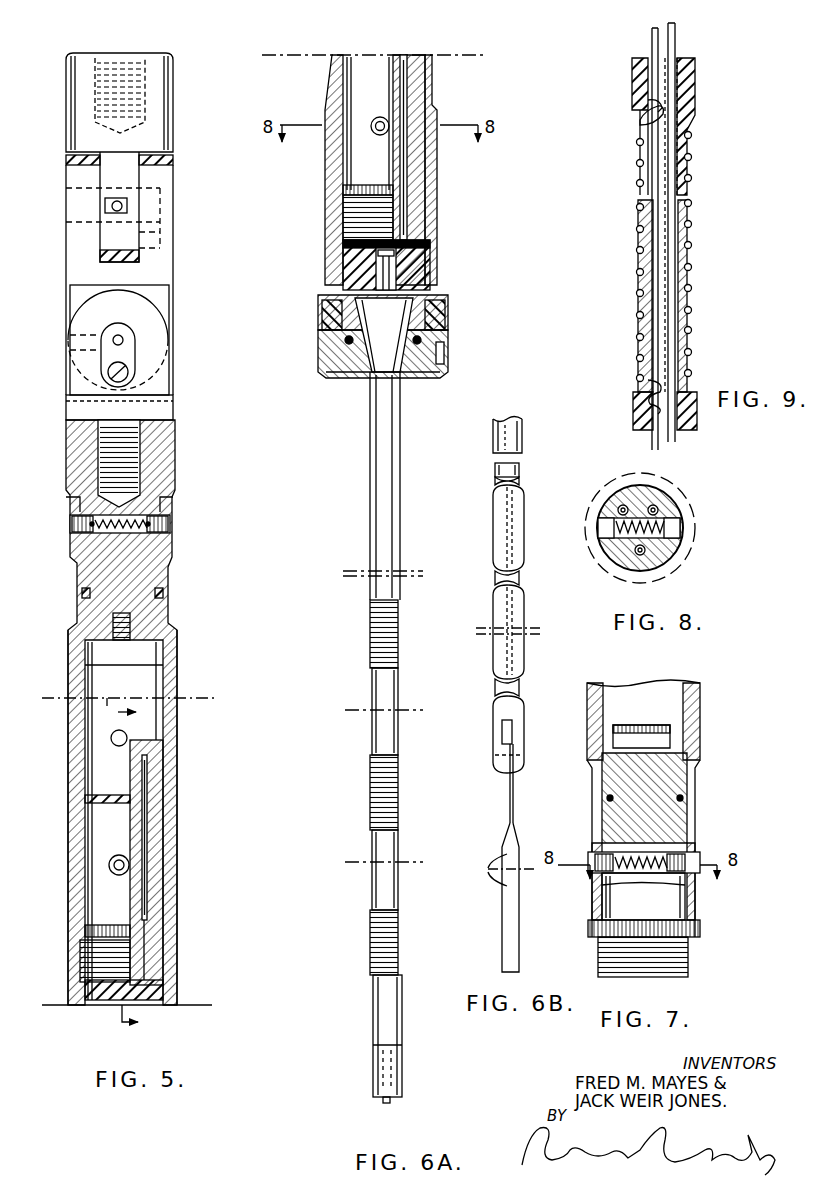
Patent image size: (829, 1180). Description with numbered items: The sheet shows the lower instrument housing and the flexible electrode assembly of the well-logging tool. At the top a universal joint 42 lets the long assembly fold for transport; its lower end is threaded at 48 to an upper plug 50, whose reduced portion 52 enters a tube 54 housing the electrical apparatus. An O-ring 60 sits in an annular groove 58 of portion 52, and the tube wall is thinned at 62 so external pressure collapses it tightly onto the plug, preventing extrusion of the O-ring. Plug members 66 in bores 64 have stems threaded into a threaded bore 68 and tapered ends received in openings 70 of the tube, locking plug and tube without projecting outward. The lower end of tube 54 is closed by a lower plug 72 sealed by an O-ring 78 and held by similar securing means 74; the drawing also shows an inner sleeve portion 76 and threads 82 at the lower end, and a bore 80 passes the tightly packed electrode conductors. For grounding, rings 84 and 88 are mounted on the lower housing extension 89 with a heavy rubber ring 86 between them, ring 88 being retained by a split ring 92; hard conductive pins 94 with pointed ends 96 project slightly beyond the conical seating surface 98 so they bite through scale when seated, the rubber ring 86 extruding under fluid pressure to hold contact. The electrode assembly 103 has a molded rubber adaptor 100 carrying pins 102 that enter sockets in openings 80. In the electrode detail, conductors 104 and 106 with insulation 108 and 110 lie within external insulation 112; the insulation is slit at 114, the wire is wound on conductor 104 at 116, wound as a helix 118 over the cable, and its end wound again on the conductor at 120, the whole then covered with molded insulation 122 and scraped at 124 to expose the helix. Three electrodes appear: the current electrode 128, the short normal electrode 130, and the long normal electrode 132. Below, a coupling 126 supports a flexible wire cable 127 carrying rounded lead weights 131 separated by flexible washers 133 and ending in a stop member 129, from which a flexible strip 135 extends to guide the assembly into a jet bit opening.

In FIG. 5, the universal joint 42 is at (142, 554).
In FIG. 5, the threaded lower end of universal joint 48 is at (140, 470).
In FIG. 5, the upper plug 50 is at (176, 492).
In FIG. 5, the reduced portion of plug 52 is at (160, 555).
In FIG. 5, the tube 54 is at (178, 700).
In FIG. 6A, the tube 54 is at (440, 166).
In FIG. 7, the tube 54 is at (700, 701).
In FIG. 5, the annular groove 58 is at (85, 615).
In FIG. 5, the O-ring 60 is at (165, 595).
In FIG. 5, the reduced outside diameter portion of tube 62 is at (78, 598).
In FIG. 5, the bores 64 is at (76, 500).
In FIG. 5, the plug members 66 is at (90, 535).
In FIG. 5, the threaded bore 68 is at (120, 536).
In FIG. 5, the openings 70 is at (72, 526).
In FIG. 5, the lower plug 72 is at (167, 933).
In FIG. 6A, the lower plug 72 is at (425, 199).
In FIG. 7, the lower plug 72 is at (700, 930).
In FIG. 5, the securing means 74 is at (106, 866).
In FIG. 6A, the securing means 74 is at (372, 131).
In FIG. 8, the securing means 74 is at (688, 528).
In FIG. 7, the securing means 74 is at (703, 850).
In FIG. 5, the inner sleeve 76 is at (178, 823).
In FIG. 6A, the inner sleeve 76 is at (432, 79).
In FIG. 7, the inner sleeve 76 is at (697, 819).
In FIG. 5, the O-ring 78 is at (152, 801).
In FIG. 6A, the O-ring 78 is at (416, 60).
In FIG. 7, the O-ring 78 is at (682, 798).
In FIG. 5, the bore 80 is at (148, 880).
In FIG. 6A, the bore 80 is at (405, 106).
In FIG. 8, the bore 80 is at (658, 511).
In FIG. 5, the threads 82 is at (82, 960).
In FIG. 6A, the threads 82 is at (345, 219).
In FIG. 7, the threads 82 is at (688, 961).
In FIG. 6A, the ring 84 is at (447, 300).
In FIG. 6A, the rubber ring 86 is at (447, 319).
In FIG. 6A, the ring 88 is at (450, 341).
In FIG. 6A, the lower extension of housing 89 is at (428, 276).
In FIG. 6A, the split ring 92 is at (345, 341).
In FIG. 6A, the pins 94 is at (448, 353).
In FIG. 6A, the pointed ends 96 is at (440, 373).
In FIG. 6A, the conical seating surface 98 is at (325, 373).
In FIG. 6A, the adaptor portion 100 is at (378, 330).
In FIG. 5, the pins 102 is at (152, 978).
In FIG. 6A, the pins 102 is at (400, 253).
In FIG. 6A, the electrode assembly 103 is at (400, 556).
In FIG. 9, the electrode assembly 103 is at (626, 423).
In FIG. 9, the conductor 104 is at (654, 440).
In FIG. 9, the conductor 106 is at (678, 33).
In FIG. 9, the insulation of first conductor 108 is at (672, 445).
In FIG. 9, the insulation of second conductor 110 is at (676, 56).
In FIG. 9, the external insulation 112 is at (690, 430).
In FIG. 9, the slit 114 is at (646, 188).
In FIG. 9, the wound wire end 116 is at (648, 388).
In FIG. 6A, the electrode helix 118 is at (400, 651).
In FIG. 9, the electrode helix 118 is at (636, 252).
In FIG. 9, the wound wire end 120 is at (640, 103).
In FIG. 6A, the molded insulation 122 is at (402, 698).
In FIG. 9, the molded insulation 122 is at (632, 409).
In FIG. 9, the scraped region 124 is at (636, 303).
In FIG. 6A, the coupling 126 is at (404, 1075).
In FIG. 6B, the coupling 126 is at (521, 431).
In FIG. 6A, the flexible wire cable 127 is at (384, 1101).
In FIG. 6B, the flexible wire cable 127 is at (497, 468).
In FIG. 6A, the current electrode 128 is at (364, 950).
In FIG. 6B, the stop member 129 is at (524, 731).
In FIG. 6A, the short normal electrode 130 is at (364, 808).
In FIG. 6B, the lead weights 131 is at (523, 520).
In FIG. 6A, the long normal electrode 132 is at (366, 637).
In FIG. 6B, the flexible washers 133 is at (522, 479).
In FIG. 6B, the flexible strip 135 is at (500, 866).